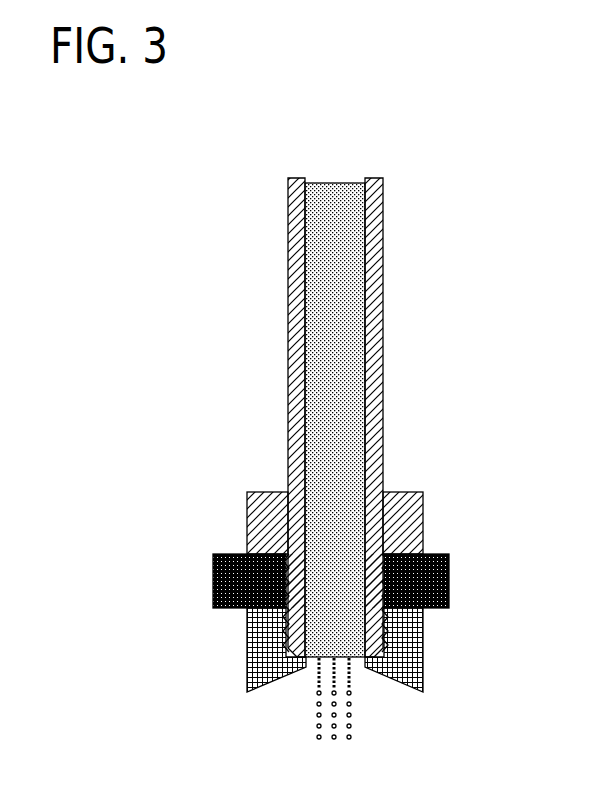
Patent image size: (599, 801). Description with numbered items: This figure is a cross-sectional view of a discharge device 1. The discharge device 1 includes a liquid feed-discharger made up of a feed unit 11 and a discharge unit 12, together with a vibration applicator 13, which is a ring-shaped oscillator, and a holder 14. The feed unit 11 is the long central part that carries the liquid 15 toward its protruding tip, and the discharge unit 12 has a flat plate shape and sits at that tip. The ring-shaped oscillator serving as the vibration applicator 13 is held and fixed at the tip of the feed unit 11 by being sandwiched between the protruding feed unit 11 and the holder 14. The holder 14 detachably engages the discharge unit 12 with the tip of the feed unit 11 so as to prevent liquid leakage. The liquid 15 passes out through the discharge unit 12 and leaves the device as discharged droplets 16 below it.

The discharge device 1 is at (276, 143).
The feed unit 11 is at (383, 237).
The discharge unit 12 is at (358, 662).
The vibration applicator 13 is at (447, 556).
The holder 14 is at (423, 673).
The liquid 15 is at (340, 183).
The discharged droplets 16 is at (318, 728).